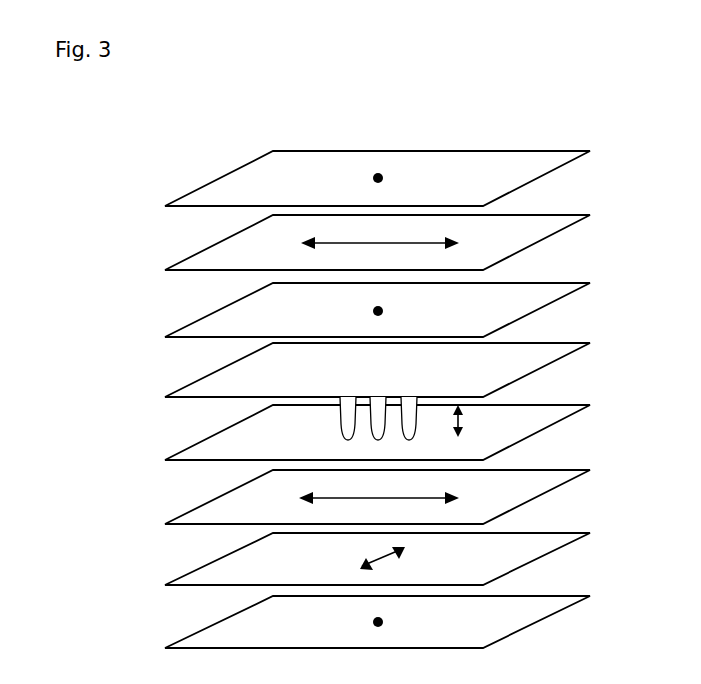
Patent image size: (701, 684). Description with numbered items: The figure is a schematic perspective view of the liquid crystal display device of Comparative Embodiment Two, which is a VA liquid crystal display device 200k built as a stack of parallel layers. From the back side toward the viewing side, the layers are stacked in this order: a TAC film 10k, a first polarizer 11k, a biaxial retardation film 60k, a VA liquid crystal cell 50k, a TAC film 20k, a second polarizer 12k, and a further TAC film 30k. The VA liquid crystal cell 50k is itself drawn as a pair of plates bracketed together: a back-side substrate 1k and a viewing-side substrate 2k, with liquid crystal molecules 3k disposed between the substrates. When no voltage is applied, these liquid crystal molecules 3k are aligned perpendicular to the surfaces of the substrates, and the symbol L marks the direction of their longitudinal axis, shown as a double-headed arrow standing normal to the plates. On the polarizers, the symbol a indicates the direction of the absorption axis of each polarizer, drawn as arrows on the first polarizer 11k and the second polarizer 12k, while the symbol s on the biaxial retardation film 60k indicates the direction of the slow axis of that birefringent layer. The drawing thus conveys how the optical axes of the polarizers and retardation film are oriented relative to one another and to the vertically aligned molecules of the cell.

The VA liquid crystal display device 200k is at (649, 122).
The TAC film 30k is at (522, 172).
The second polarizer 12k is at (395, 390).
The TAC film 20k is at (523, 303).
The VA liquid crystal cell 50k is at (392, 398).
The viewing-side substrate 2k is at (217, 383).
The back-side substrate 1k is at (210, 450).
The liquid crystal molecules 3k is at (340, 416).
The direction of the longitudinal axis of the liquid crystal molecules L is at (463, 420).
The biaxial retardation film 60k is at (396, 501).
The first polarizer 11k is at (523, 553).
The TAC film 10k is at (523, 615).
The direction of the absorption axis of each polarizer a is at (310, 243).
The direction of the slow axis of each birefringent layer s is at (307, 498).